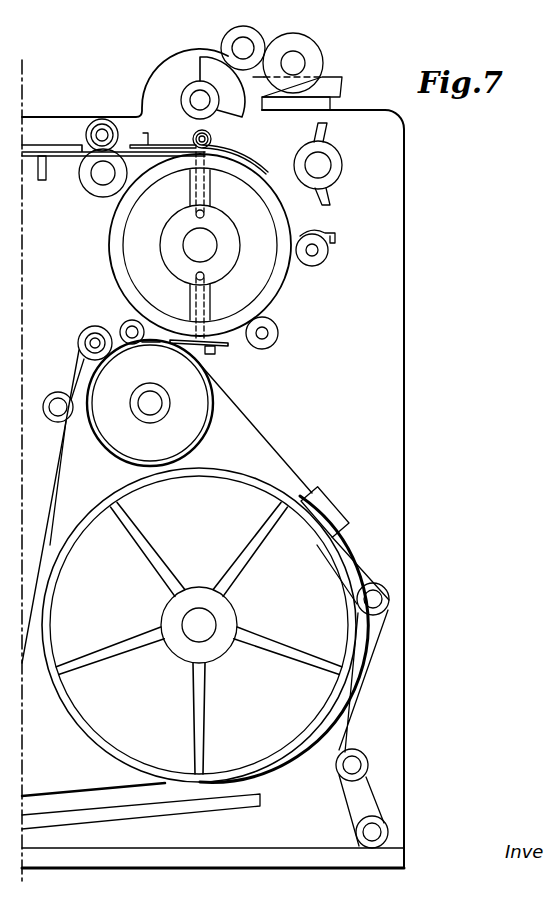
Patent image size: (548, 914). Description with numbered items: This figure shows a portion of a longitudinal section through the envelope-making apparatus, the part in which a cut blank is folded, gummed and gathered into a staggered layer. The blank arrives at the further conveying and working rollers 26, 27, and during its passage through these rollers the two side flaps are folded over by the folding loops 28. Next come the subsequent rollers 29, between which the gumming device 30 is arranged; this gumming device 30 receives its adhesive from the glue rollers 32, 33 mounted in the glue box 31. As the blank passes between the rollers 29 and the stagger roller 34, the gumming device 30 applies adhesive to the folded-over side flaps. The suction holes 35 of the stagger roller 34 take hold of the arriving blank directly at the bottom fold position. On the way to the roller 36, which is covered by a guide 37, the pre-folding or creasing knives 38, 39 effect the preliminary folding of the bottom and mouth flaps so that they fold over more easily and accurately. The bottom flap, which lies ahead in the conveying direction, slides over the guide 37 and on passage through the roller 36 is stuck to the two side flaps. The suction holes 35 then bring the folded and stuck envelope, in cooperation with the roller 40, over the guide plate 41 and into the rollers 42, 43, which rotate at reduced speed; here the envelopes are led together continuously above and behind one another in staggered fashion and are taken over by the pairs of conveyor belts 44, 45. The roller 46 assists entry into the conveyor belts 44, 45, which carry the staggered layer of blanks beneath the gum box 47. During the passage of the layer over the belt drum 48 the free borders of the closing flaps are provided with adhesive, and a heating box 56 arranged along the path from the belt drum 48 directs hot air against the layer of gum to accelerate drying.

The conveying and working roller 26 is at (100, 128).
The conveying and working roller 27 is at (90, 185).
The folding loops 28 is at (48, 150).
The rollers 29 is at (212, 141).
The gumming device 30 is at (204, 75).
The glue box 31 is at (330, 90).
The glue roller 32 is at (248, 33).
The glue roller 33 is at (297, 44).
The stagger roller 34 is at (112, 260).
The suction holes 35 is at (198, 172).
The roller 36 is at (322, 255).
The guide 37 is at (327, 234).
The pre-folding or creasing knife 38 is at (328, 125).
The pre-folding or creasing knife 39 is at (336, 209).
The roller 40 is at (277, 331).
The guide plate 41 is at (226, 349).
The roller 42 is at (124, 327).
The roller 43 is at (206, 430).
The conveyor belt 44 is at (58, 472).
The conveyor belt 45 is at (268, 444).
The roller 46 is at (80, 343).
The gum box 47 is at (338, 516).
The belt drum 48 is at (335, 577).
The heating box 56 is at (248, 806).